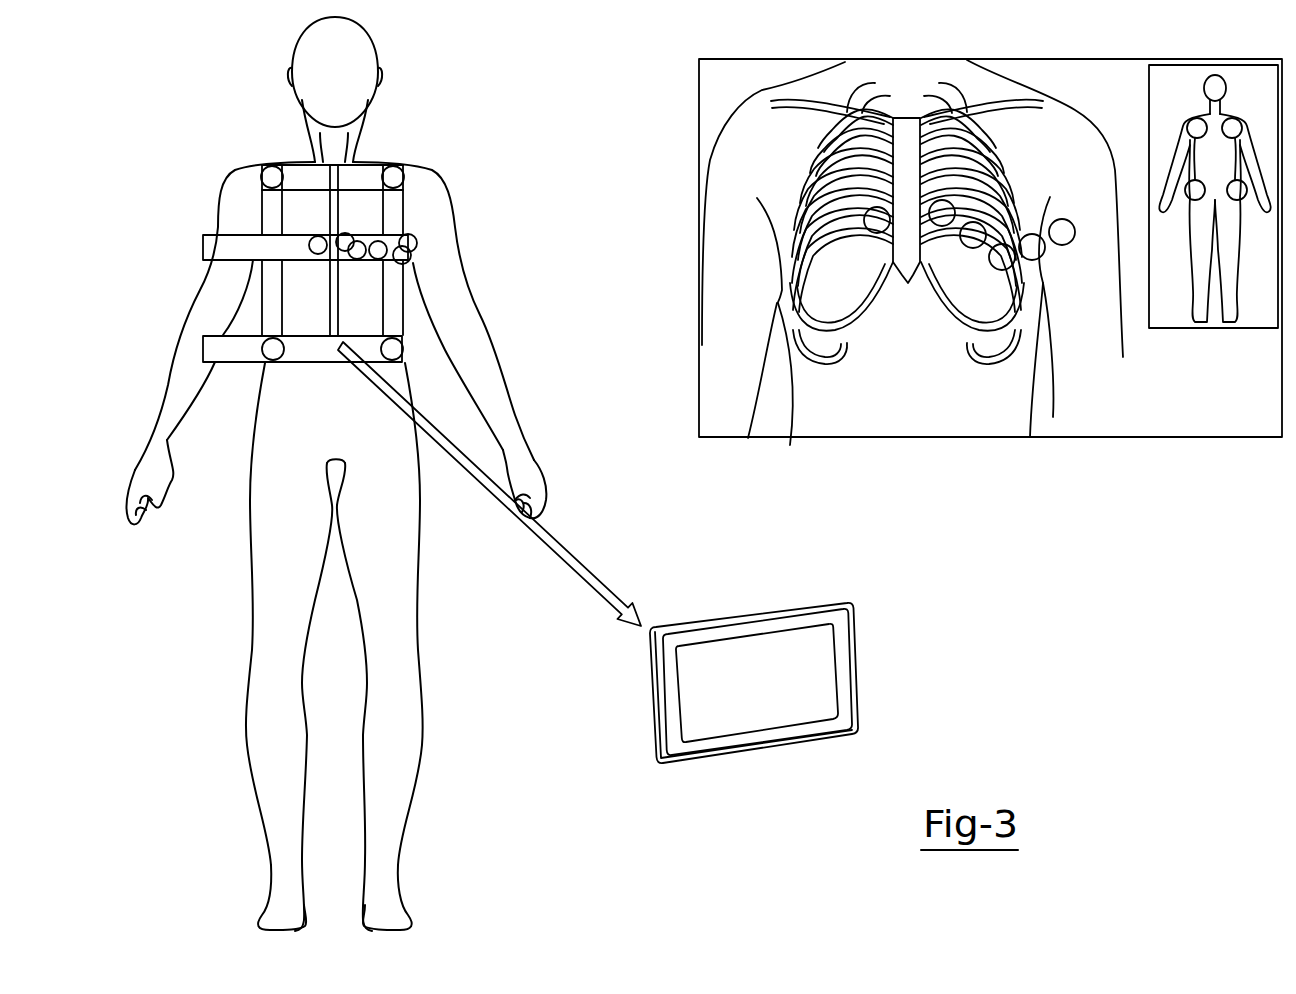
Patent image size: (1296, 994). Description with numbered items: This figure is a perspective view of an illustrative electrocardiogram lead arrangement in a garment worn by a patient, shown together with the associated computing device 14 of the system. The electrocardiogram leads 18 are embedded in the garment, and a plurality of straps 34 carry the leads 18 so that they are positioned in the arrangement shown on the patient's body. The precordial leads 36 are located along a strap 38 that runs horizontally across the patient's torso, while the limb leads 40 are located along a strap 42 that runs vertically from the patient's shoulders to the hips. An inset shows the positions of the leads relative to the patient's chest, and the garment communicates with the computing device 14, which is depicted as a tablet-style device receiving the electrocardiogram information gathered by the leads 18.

The computing device 14 is at (831, 596).
The electrocardiogram leads 18 is at (277, 176).
The straps 34 is at (390, 217).
The precordial leads 36 is at (318, 236).
The strap 38 is at (272, 250).
The limb leads 40 is at (275, 349).
The strap 42 is at (390, 298).